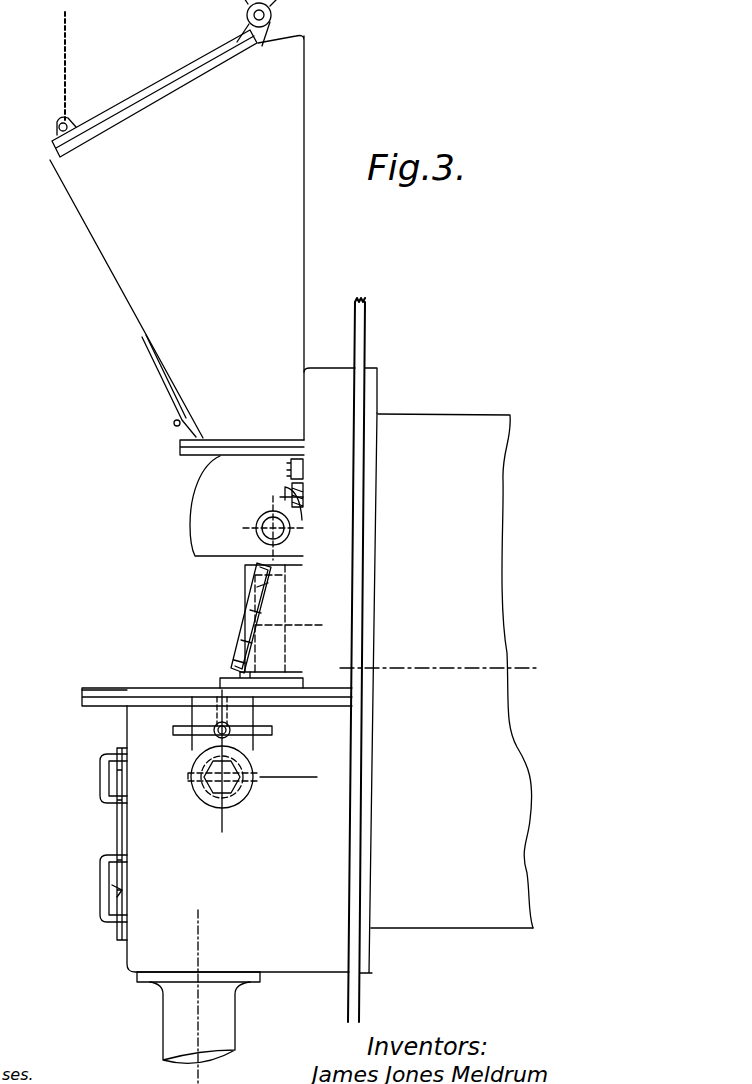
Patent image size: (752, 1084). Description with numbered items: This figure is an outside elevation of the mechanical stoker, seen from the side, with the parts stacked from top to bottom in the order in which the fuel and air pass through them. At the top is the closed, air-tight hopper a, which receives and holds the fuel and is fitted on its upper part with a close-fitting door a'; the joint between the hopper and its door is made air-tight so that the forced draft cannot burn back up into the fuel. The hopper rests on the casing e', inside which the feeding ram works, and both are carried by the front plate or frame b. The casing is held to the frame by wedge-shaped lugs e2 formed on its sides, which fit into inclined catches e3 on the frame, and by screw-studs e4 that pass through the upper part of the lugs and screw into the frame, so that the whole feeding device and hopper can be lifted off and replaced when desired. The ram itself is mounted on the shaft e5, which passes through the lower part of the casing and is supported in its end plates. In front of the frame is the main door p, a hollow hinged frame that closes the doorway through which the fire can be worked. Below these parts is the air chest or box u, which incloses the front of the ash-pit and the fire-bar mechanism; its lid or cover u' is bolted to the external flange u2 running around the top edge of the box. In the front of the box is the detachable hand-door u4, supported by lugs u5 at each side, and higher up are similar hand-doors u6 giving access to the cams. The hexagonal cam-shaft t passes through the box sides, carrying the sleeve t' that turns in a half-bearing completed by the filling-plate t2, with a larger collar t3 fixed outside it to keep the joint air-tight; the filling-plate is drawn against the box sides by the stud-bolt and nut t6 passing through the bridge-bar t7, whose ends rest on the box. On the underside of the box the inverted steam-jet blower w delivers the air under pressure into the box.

The hopper a is at (177, 238).
The hopper door a' is at (164, 78).
The front plate or frame b is at (321, 413).
The casing e' is at (246, 506).
The wedge-shaped lugs e2 is at (298, 493).
The inclined catches e3 is at (280, 497).
The screw-studs e4 is at (220, 638).
The ram shaft e5 is at (262, 540).
The main door p is at (242, 602).
The air chest or box u is at (238, 895).
The lid or cover u' is at (217, 679).
The external flange u2 is at (107, 702).
The detachable hand-door u4 is at (117, 912).
The lugs u5 is at (117, 890).
The hand-doors u6 is at (107, 787).
The cam-shaft t is at (211, 763).
The sleeve t' is at (227, 801).
The filling-plate t2 is at (249, 742).
The collar t3 is at (247, 787).
The stud-bolt and nut t6 is at (215, 737).
The bridge-bar t7 is at (263, 731).
The steam-jet blowers w is at (198, 1017).